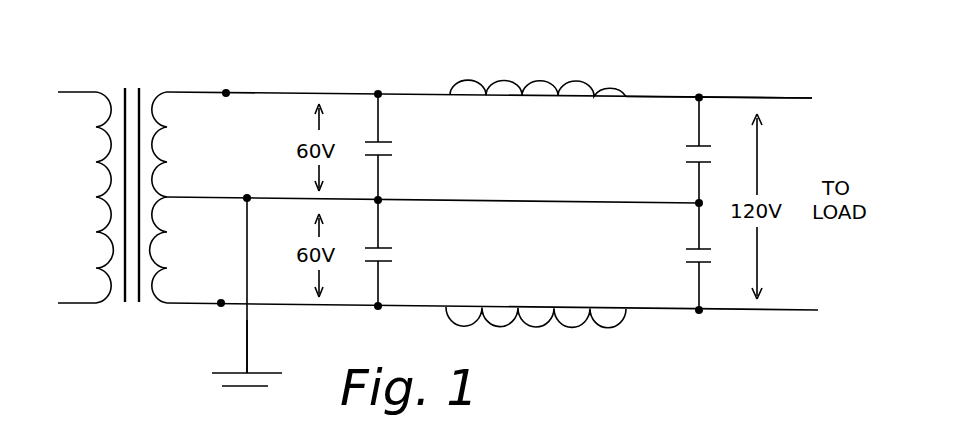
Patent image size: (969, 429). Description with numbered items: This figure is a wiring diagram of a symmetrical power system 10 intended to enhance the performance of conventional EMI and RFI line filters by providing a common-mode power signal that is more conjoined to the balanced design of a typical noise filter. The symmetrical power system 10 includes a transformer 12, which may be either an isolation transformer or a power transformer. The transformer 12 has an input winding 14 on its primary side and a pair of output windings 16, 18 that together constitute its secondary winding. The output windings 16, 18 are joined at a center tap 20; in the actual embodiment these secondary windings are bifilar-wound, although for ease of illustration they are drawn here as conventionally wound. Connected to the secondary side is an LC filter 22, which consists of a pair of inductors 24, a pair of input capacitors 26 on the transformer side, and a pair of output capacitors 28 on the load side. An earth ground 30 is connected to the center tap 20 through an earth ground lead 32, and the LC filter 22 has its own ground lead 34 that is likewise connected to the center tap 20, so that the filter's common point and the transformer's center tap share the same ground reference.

The symmetrical power system 10 is at (492, 155).
The transformer 12 is at (129, 151).
The input winding 14 is at (95, 163).
The output winding 16 is at (160, 160).
The output winding 18 is at (160, 268).
The center tap 20 is at (247, 194).
The LC filter 22 is at (640, 86).
The inductors 24 is at (505, 78).
The input capacitors 26 is at (385, 142).
The output capacitors 28 is at (690, 146).
The earth ground 30 is at (258, 372).
The earth ground lead 32 is at (245, 339).
The ground lead 34 is at (523, 200).